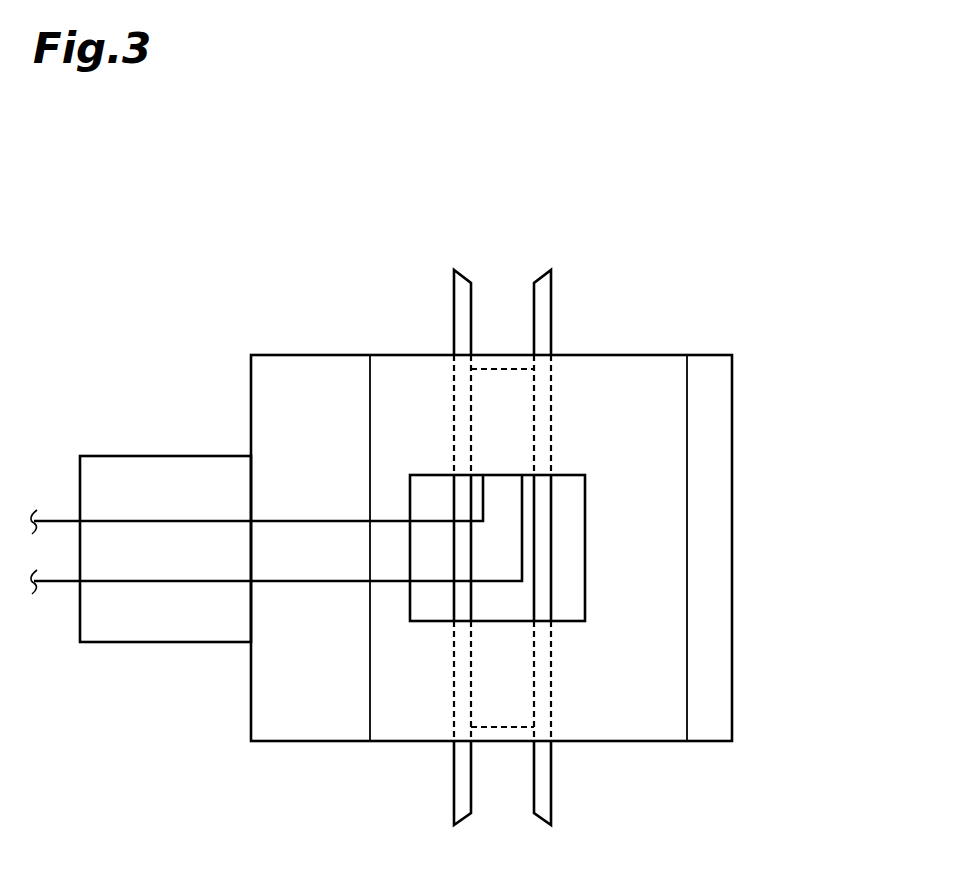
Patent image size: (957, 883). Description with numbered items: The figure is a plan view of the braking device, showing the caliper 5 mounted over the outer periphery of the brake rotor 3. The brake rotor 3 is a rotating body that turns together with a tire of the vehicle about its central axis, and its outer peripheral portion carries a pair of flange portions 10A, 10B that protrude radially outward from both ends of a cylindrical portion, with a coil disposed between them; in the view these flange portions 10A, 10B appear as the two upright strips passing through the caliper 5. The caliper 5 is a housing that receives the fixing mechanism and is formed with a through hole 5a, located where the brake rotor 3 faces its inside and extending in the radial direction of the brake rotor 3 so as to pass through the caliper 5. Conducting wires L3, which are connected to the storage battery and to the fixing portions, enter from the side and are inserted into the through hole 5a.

The brake rotor 3 is at (596, 296).
The caliper 5 is at (733, 490).
The through hole 5a is at (585, 533).
The flange portion 10A is at (455, 273).
The flange portion 10B is at (546, 273).
The conducting wires L3 is at (217, 580).